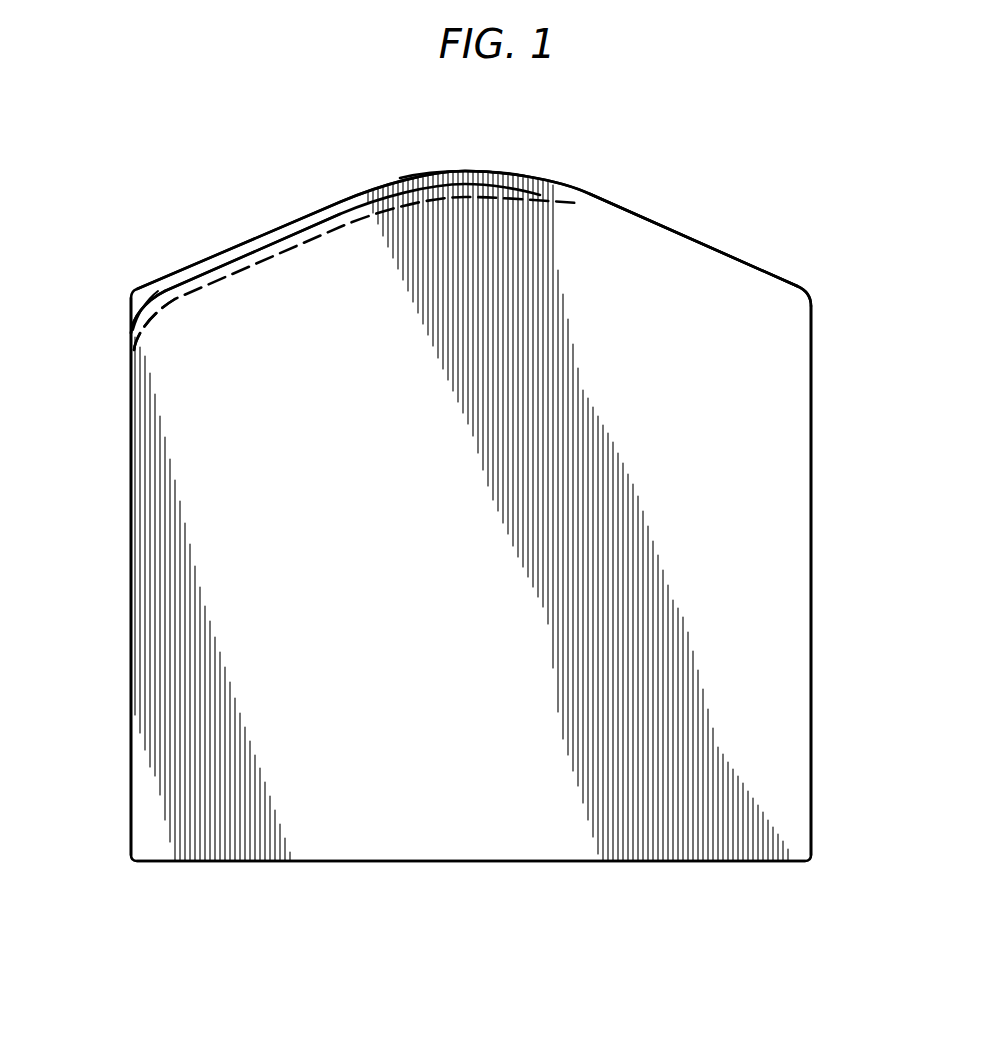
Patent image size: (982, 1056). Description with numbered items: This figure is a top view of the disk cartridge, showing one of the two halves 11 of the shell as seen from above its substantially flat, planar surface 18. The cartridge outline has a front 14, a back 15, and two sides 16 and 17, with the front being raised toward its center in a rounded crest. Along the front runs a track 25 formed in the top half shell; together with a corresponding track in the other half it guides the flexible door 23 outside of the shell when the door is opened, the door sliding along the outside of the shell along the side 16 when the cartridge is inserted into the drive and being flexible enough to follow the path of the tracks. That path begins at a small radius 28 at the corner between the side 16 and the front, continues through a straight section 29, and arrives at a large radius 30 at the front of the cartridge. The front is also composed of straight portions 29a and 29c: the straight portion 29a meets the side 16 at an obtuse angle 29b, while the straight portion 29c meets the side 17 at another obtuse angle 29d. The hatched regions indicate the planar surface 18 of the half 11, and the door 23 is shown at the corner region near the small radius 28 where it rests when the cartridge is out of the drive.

The cartridge half 11 is at (757, 298).
The front 14 is at (610, 218).
The back 15 is at (165, 861).
The side 16 is at (131, 443).
The side 17 is at (811, 613).
The planar surface 18 is at (708, 475).
The flexible door 23 is at (157, 285).
The track 25 is at (322, 228).
The small radius 28 is at (172, 297).
The straight section 29 is at (267, 238).
The straight portion 29a is at (240, 241).
The obtuse angle 29b is at (132, 303).
The straight portion 29c is at (703, 240).
The obtuse angle 29d is at (778, 287).
The large radius 30 is at (450, 172).